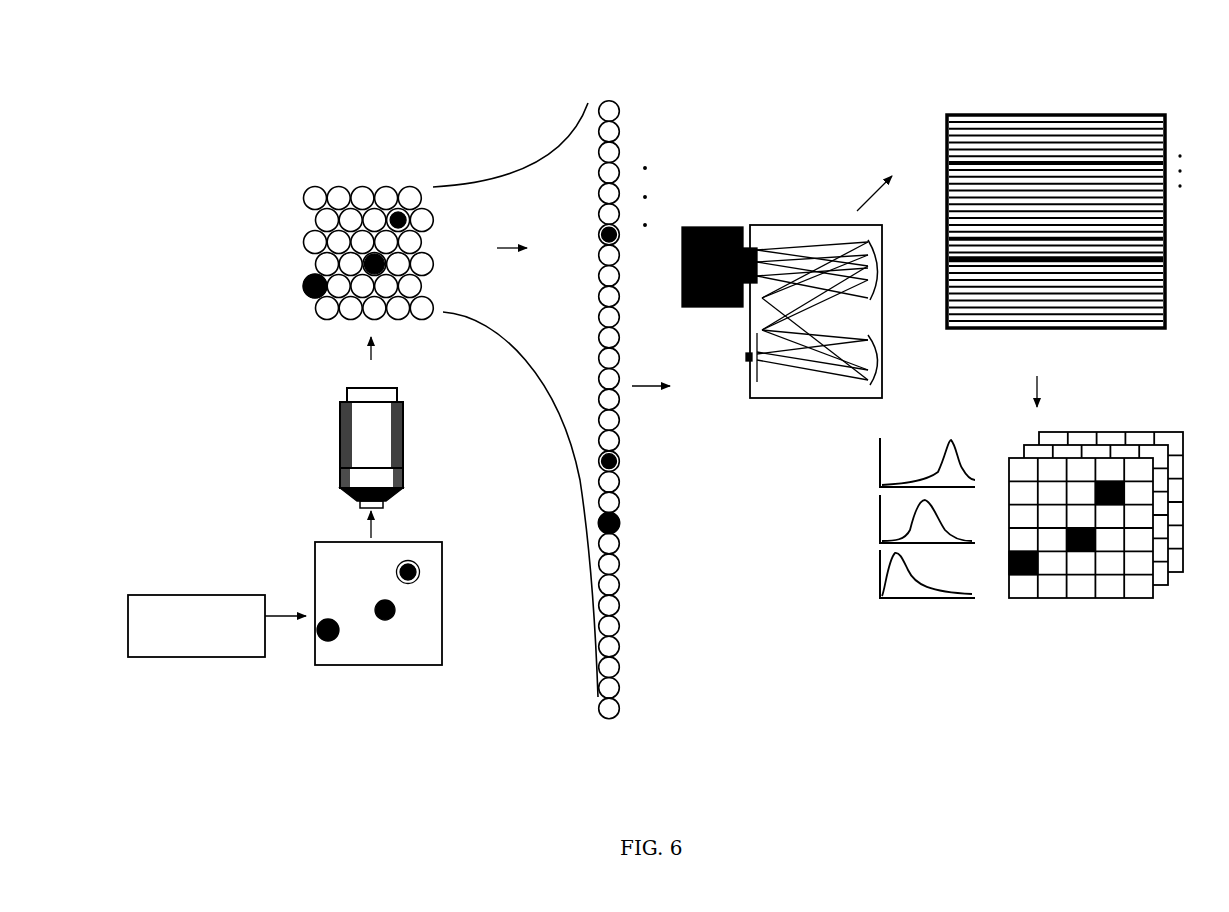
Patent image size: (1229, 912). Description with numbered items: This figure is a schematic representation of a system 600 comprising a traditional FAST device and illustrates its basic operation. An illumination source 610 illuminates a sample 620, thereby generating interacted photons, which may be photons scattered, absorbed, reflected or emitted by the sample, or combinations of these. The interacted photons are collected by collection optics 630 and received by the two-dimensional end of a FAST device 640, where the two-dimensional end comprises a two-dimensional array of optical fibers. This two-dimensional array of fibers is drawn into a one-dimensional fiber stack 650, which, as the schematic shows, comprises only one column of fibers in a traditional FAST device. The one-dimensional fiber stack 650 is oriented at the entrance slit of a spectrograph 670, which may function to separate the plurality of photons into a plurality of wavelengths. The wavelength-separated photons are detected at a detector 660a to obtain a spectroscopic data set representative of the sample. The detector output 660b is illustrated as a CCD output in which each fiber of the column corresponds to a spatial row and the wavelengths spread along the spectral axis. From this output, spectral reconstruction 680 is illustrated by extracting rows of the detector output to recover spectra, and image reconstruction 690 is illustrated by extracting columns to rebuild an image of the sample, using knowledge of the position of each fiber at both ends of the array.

The system 600 is at (215, 91).
The illumination source 610 is at (217, 643).
The sample 620 is at (431, 589).
The collection optics 630 is at (319, 435).
The FAST device 640 is at (400, 400).
The one-dimensional fiber stack 650 is at (607, 369).
The detector 660a is at (707, 275).
The detector output 660b is at (1057, 230).
The spectrograph 670 is at (800, 332).
The spectral reconstruction 680 is at (946, 598).
The image reconstruction 690 is at (1096, 601).